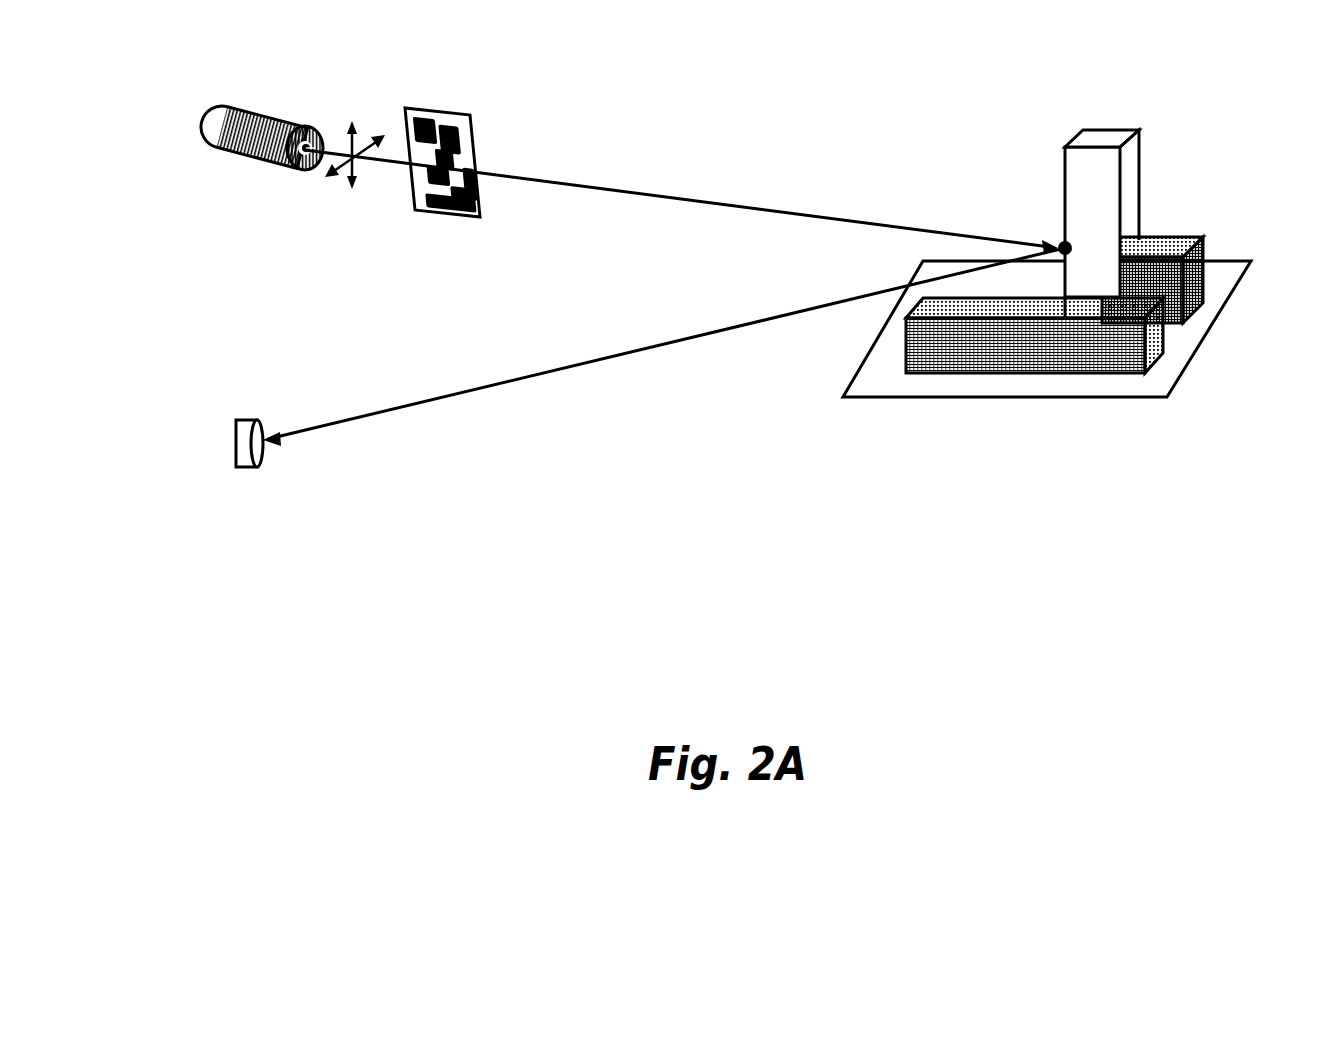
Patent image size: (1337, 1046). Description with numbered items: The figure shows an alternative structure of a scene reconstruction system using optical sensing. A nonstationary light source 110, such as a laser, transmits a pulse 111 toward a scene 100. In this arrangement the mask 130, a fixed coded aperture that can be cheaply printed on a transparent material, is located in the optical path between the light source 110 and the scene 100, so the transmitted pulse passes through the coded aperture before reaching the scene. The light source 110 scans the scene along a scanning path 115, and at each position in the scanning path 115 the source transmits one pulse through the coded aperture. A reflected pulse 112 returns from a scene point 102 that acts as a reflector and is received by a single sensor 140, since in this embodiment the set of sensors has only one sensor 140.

The scene 100 is at (1100, 133).
The scene point 102 is at (1075, 240).
The light source 110 is at (258, 112).
The wide beam pulse 111 is at (610, 188).
The reflected pulse 112 is at (685, 342).
The scanning path 115 is at (338, 192).
The coded aperture mask 130 is at (442, 110).
The sensor 140 is at (259, 420).